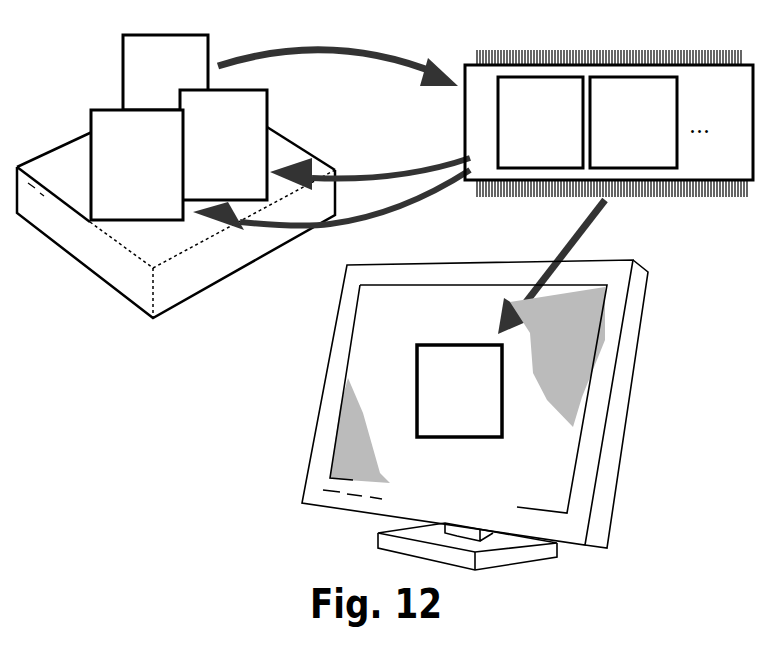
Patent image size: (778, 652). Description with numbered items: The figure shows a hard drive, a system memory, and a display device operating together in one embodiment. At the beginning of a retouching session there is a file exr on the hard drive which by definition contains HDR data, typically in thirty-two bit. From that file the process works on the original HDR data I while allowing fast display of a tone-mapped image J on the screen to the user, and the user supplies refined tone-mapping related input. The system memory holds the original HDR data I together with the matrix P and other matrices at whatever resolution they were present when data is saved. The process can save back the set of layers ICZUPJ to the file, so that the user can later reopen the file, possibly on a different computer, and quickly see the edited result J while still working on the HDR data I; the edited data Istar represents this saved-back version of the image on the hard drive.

The .exr image file exr is at (165, 72).
The image data layers I,C,Z,U,P,J ICZUPJ is at (223, 145).
The processed image I* Istar is at (137, 165).
The original HDR data I is at (540, 122).
The matrix P is at (633, 122).
The tone-mapped image J is at (459, 391).